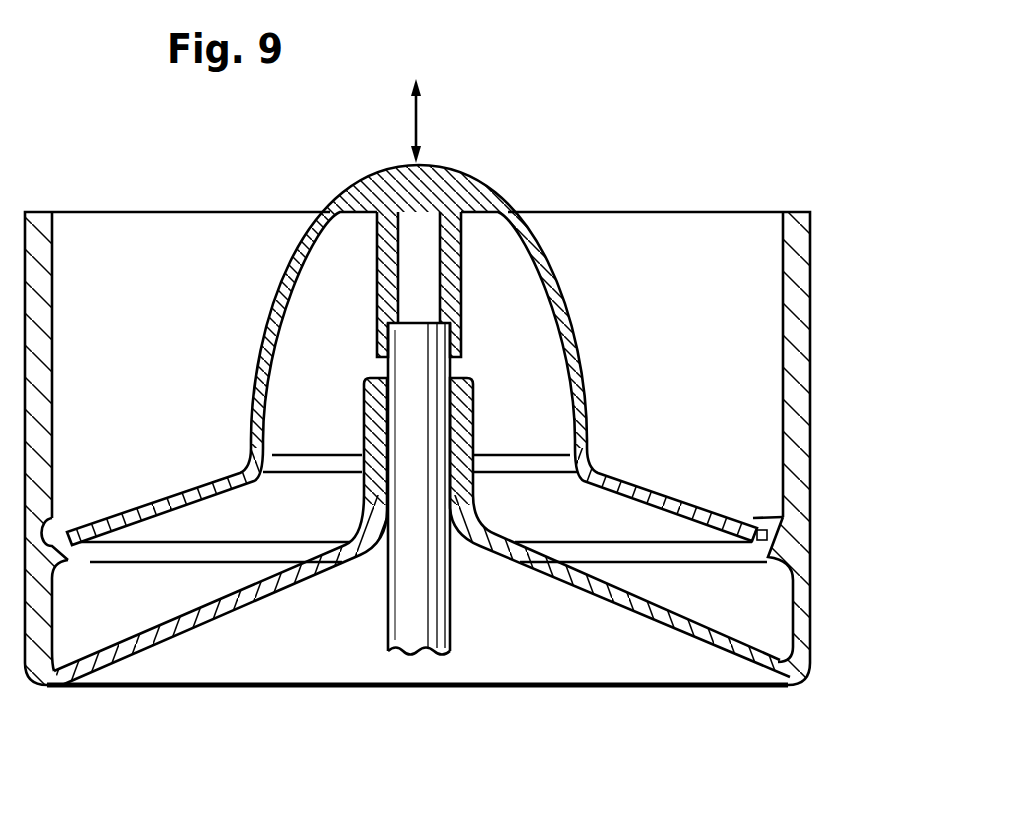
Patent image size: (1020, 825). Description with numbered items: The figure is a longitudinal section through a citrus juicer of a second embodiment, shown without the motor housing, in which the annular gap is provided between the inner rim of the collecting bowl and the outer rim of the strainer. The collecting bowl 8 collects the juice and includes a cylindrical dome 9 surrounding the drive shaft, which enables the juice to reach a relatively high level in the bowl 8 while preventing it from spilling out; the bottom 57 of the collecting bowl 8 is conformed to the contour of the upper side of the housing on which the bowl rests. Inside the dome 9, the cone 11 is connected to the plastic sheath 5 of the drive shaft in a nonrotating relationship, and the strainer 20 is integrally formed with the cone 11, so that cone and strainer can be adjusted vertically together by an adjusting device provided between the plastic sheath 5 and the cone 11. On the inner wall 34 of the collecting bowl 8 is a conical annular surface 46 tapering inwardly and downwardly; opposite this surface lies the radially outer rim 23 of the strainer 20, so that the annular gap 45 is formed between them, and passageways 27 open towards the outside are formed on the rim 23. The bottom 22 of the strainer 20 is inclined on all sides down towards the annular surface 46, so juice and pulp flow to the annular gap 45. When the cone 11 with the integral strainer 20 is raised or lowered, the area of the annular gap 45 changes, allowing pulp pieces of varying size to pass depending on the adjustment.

The plastic sheath 5 is at (411, 630).
The collecting bowl 8 is at (813, 251).
The cylindrical dome 9 is at (462, 410).
The cone 11 is at (482, 186).
The strainer 20 is at (698, 488).
The bottom of the strainer 22 is at (641, 488).
The radially outer rim of the strainer 23 is at (55, 518).
The passageways 27 is at (757, 545).
The inner wall of the collecting bowl 34 is at (53, 350).
The annular gap 45 is at (777, 516).
The conical annular surface 46 is at (71, 558).
The bottom of the collecting bowl 57 is at (637, 604).